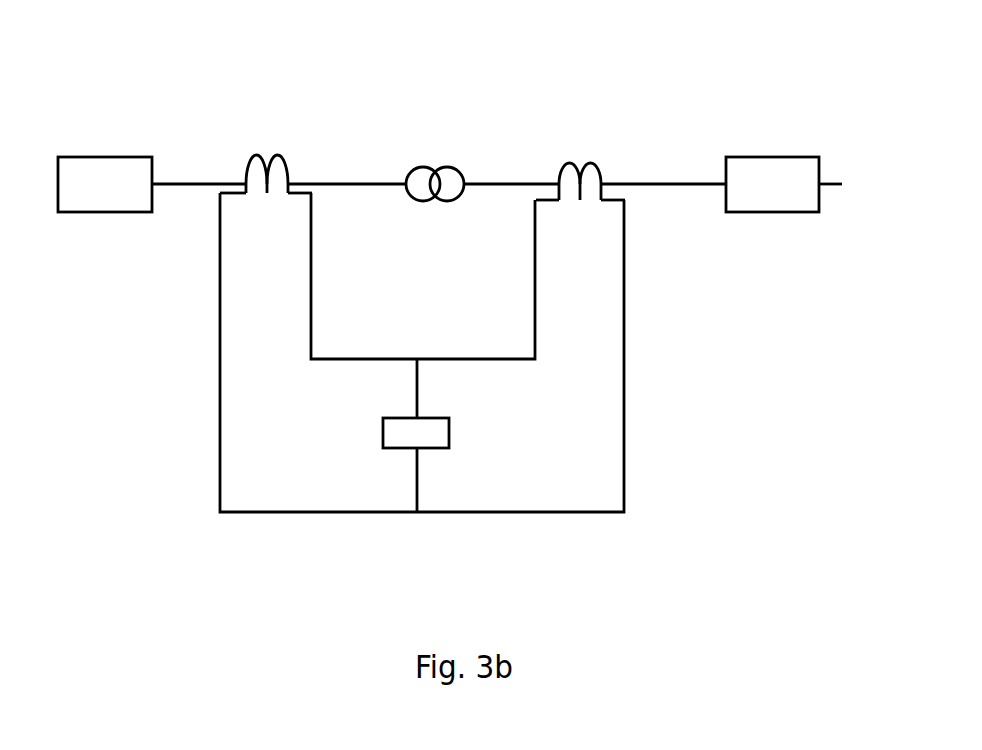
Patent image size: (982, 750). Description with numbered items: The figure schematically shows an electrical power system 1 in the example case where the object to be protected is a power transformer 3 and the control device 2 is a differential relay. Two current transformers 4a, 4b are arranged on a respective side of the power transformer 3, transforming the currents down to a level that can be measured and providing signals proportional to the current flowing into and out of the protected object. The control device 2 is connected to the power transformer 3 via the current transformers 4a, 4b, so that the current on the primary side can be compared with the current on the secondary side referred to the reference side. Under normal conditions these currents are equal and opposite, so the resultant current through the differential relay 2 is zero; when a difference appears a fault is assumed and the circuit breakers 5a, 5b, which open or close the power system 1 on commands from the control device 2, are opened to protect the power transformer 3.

The electrical power system 1 is at (553, 84).
The control device 2 is at (407, 417).
The power transformer 3 is at (446, 167).
The current transformer 4a is at (266, 154).
The current transformer 4b is at (618, 156).
The circuit breaker 5a is at (110, 156).
The circuit breaker 5b is at (778, 156).